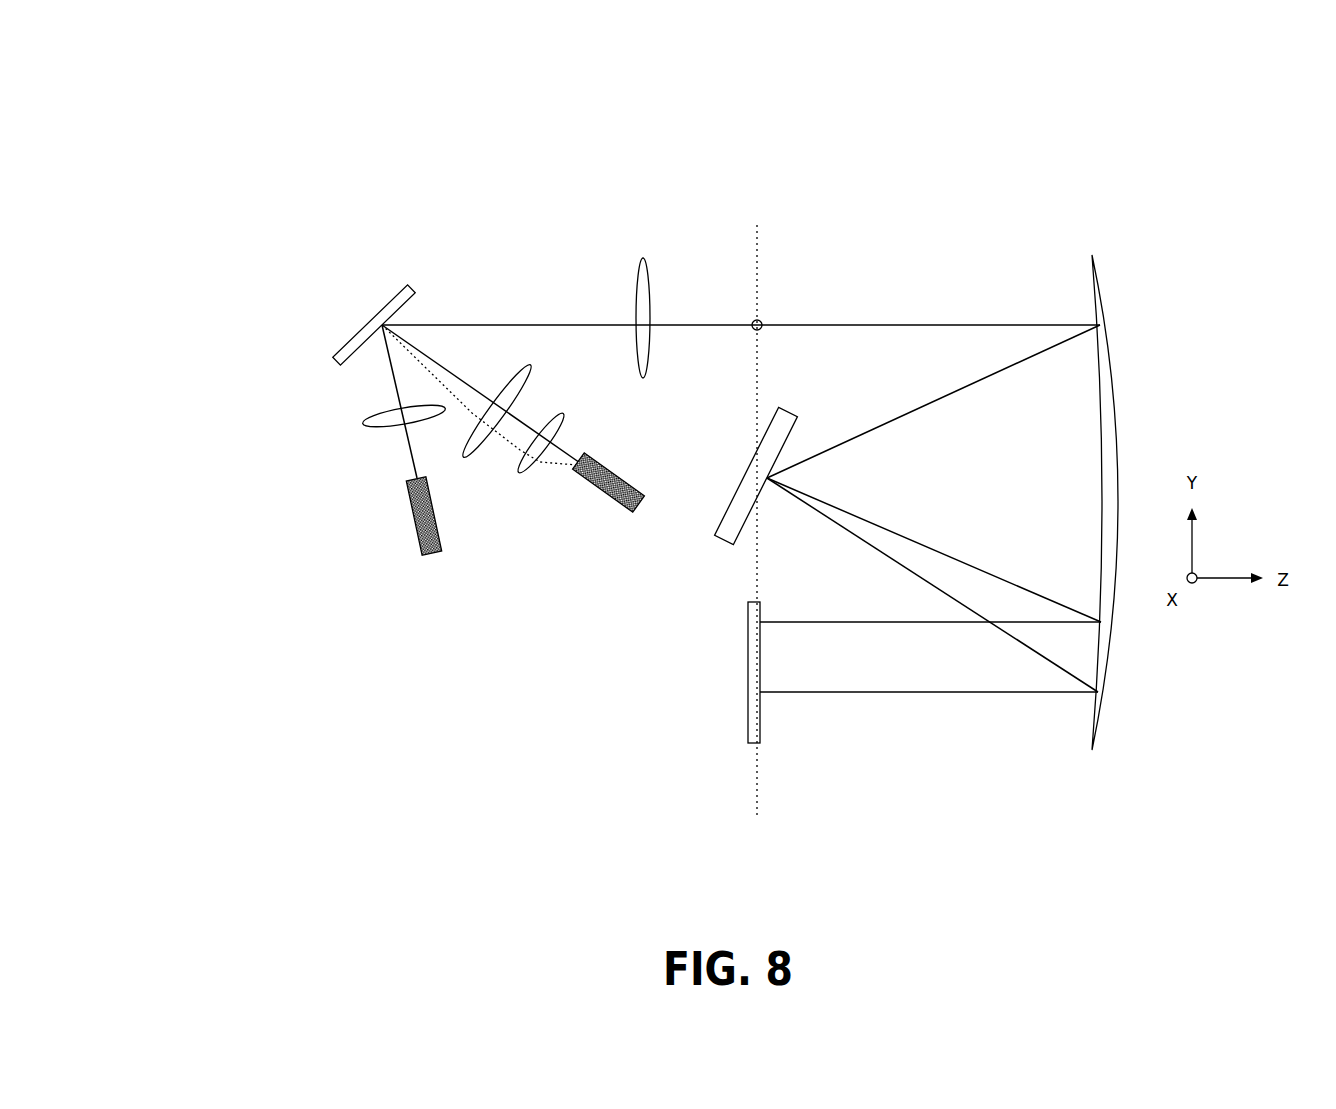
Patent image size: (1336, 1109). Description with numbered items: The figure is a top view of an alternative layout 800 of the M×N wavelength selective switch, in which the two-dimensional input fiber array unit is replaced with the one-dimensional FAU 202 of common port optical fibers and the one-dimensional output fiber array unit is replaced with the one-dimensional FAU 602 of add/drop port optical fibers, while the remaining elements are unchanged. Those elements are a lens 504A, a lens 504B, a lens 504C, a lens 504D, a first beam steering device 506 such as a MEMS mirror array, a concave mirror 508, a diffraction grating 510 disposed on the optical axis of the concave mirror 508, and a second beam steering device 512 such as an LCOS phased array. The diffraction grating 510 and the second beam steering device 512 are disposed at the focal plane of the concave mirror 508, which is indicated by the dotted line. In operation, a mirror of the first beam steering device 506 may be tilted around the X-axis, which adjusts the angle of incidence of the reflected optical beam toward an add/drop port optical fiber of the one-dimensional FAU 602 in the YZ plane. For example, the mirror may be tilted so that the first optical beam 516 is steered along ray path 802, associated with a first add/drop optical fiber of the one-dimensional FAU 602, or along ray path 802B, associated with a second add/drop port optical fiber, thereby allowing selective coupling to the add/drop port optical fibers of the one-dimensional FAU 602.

The alternative layout 800 is at (214, 90).
The first beam steering device 506 is at (417, 284).
The ray path 802 is at (468, 398).
The ray path 802B is at (534, 378).
The lens 504B is at (643, 252).
The first optical beam 516 is at (761, 318).
The concave mirror 508 is at (1117, 383).
The 1D FAU 602 is at (618, 459).
The lens 504A is at (390, 425).
The lens 504C is at (483, 438).
The lens 504D is at (542, 463).
The 1D FAU 202 is at (417, 537).
The diffraction grating 510 is at (722, 543).
The second beam steering device 512 is at (748, 652).